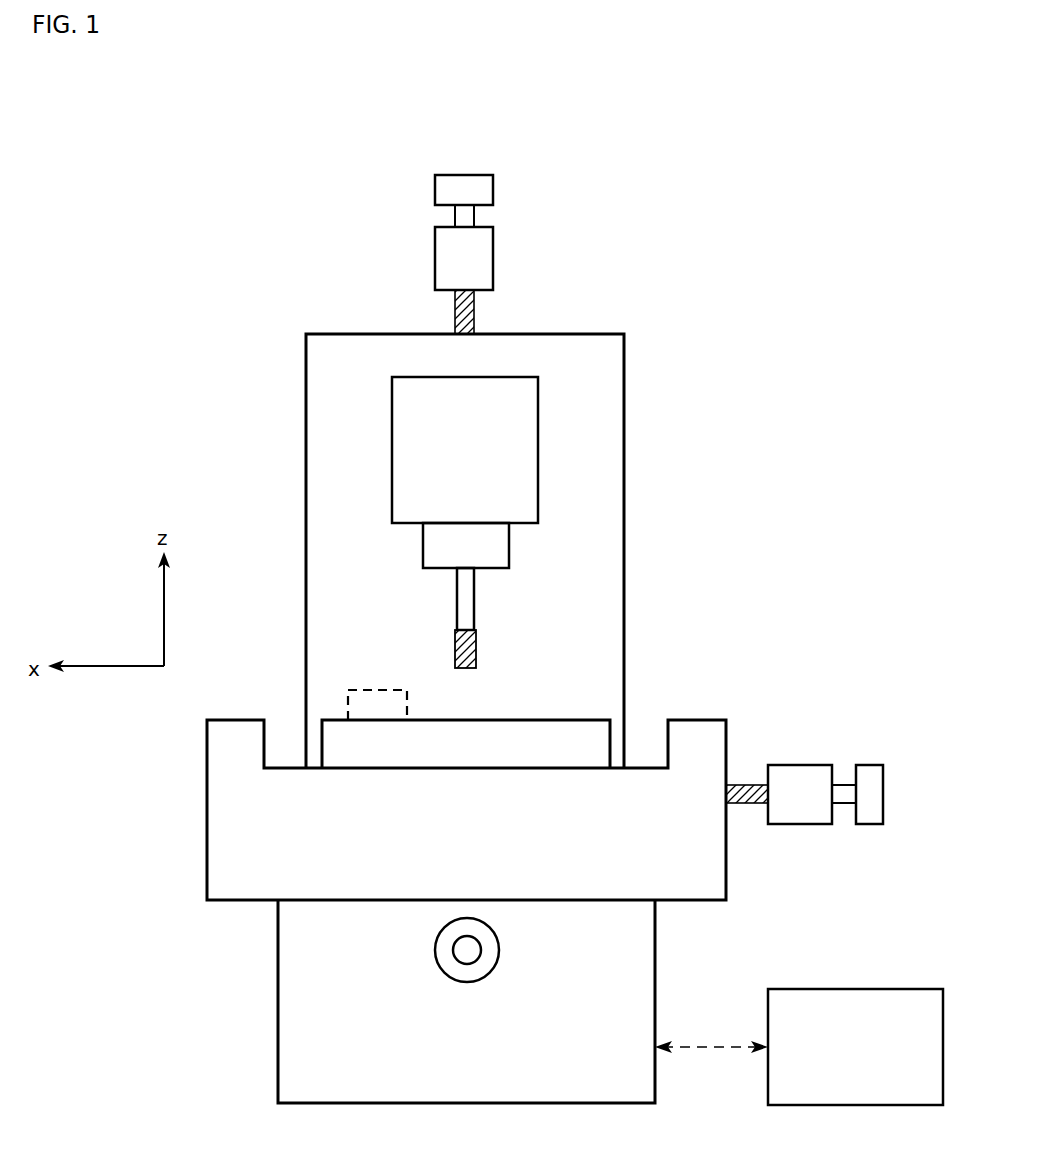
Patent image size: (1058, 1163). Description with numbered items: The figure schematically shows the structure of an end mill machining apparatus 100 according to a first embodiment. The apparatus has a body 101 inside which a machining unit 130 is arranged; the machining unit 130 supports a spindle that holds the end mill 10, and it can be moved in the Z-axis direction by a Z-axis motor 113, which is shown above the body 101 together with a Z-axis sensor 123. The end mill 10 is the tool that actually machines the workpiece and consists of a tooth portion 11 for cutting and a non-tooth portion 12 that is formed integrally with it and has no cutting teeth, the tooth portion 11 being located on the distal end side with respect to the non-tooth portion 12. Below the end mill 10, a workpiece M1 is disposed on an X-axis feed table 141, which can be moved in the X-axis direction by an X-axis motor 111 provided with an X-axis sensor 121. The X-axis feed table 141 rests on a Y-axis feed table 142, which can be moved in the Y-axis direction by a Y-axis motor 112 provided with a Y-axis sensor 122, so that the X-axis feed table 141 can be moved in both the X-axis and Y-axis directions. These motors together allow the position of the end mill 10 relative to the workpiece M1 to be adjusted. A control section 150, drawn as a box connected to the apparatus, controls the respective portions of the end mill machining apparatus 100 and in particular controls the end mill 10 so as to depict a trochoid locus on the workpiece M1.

The end mill machining apparatus 100 is at (780, 265).
The body 101 is at (605, 393).
The Z-axis sensor 123 is at (485, 193).
The Z-axis motor 113 is at (485, 267).
The machining unit 130 is at (517, 467).
The end mill 10 is at (385, 588).
The non-tooth portion 12 is at (463, 593).
The tooth portion 11 is at (458, 638).
The workpiece M1 is at (353, 688).
The X-axis feed table 141 is at (555, 733).
The Y-axis feed table 142 is at (688, 733).
The X-axis motor 111 is at (800, 771).
The X-axis sensor 121 is at (864, 771).
The Y-axis sensor 122 is at (468, 950).
The Y-axis motor 112 is at (487, 962).
The control section 150 is at (888, 998).